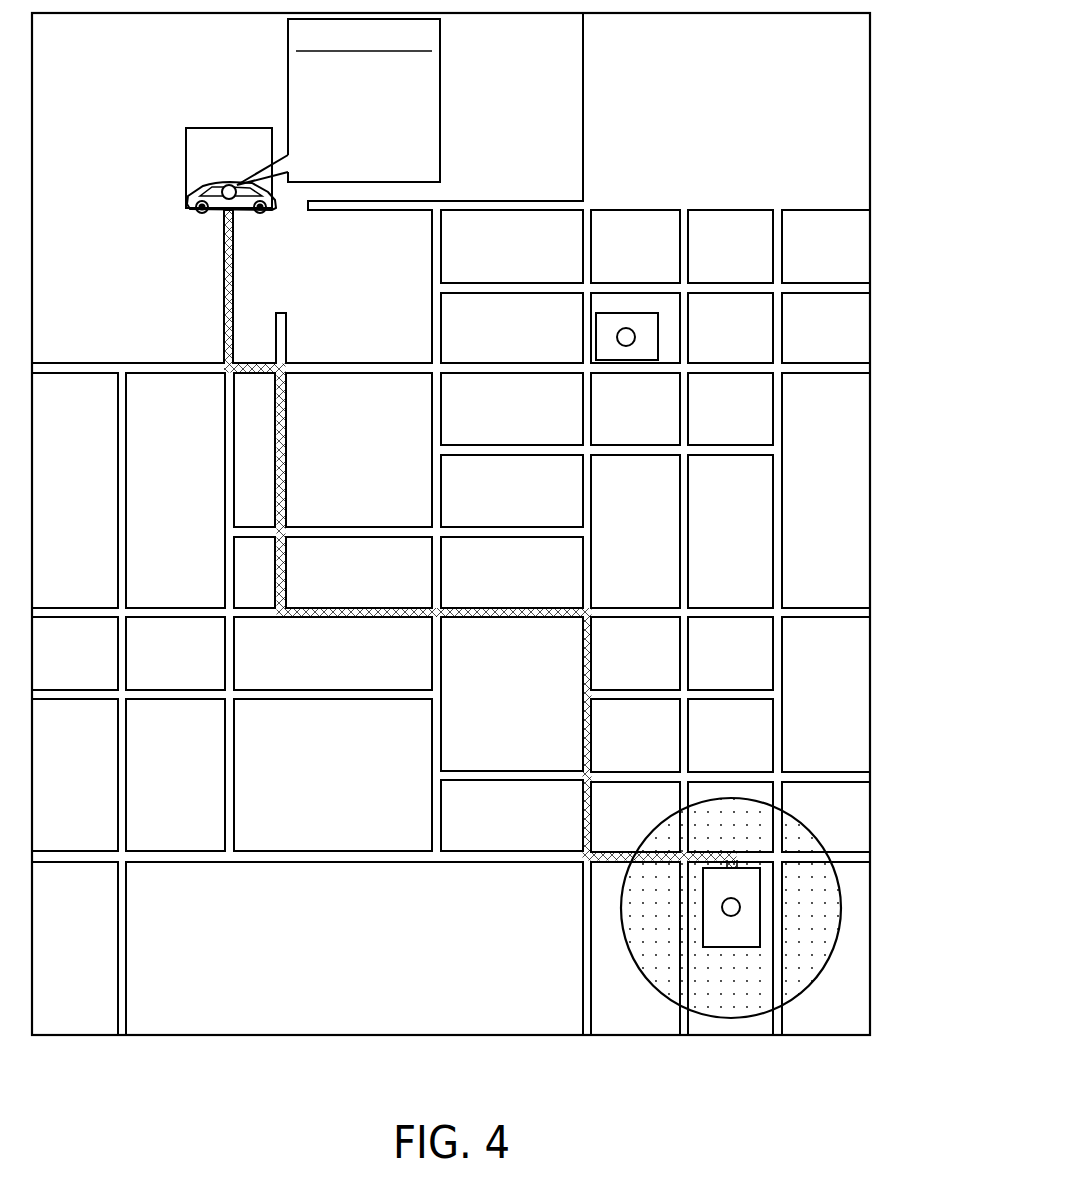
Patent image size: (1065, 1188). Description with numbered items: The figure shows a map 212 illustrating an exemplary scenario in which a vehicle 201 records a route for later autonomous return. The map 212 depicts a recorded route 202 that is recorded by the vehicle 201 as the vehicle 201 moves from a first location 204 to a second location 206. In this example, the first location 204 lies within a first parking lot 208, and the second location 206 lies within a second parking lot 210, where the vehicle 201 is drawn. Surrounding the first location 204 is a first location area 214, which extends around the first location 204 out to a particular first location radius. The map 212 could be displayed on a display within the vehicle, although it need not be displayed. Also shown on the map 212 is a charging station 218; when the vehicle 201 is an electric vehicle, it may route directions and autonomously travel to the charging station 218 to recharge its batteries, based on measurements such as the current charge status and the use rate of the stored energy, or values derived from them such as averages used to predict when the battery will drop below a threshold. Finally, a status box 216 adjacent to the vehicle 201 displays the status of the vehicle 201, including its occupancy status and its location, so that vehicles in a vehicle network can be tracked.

The vehicle 201 is at (268, 212).
The recorded route 202 is at (284, 470).
The first location 204 is at (740, 907).
The second location 206 is at (205, 186).
The first parking lot 208 is at (758, 868).
The second parking lot 210 is at (222, 128).
The map 212 is at (782, 168).
The first location area 214 is at (732, 1018).
The status box 216 is at (440, 97).
The charging station 218 is at (626, 328).